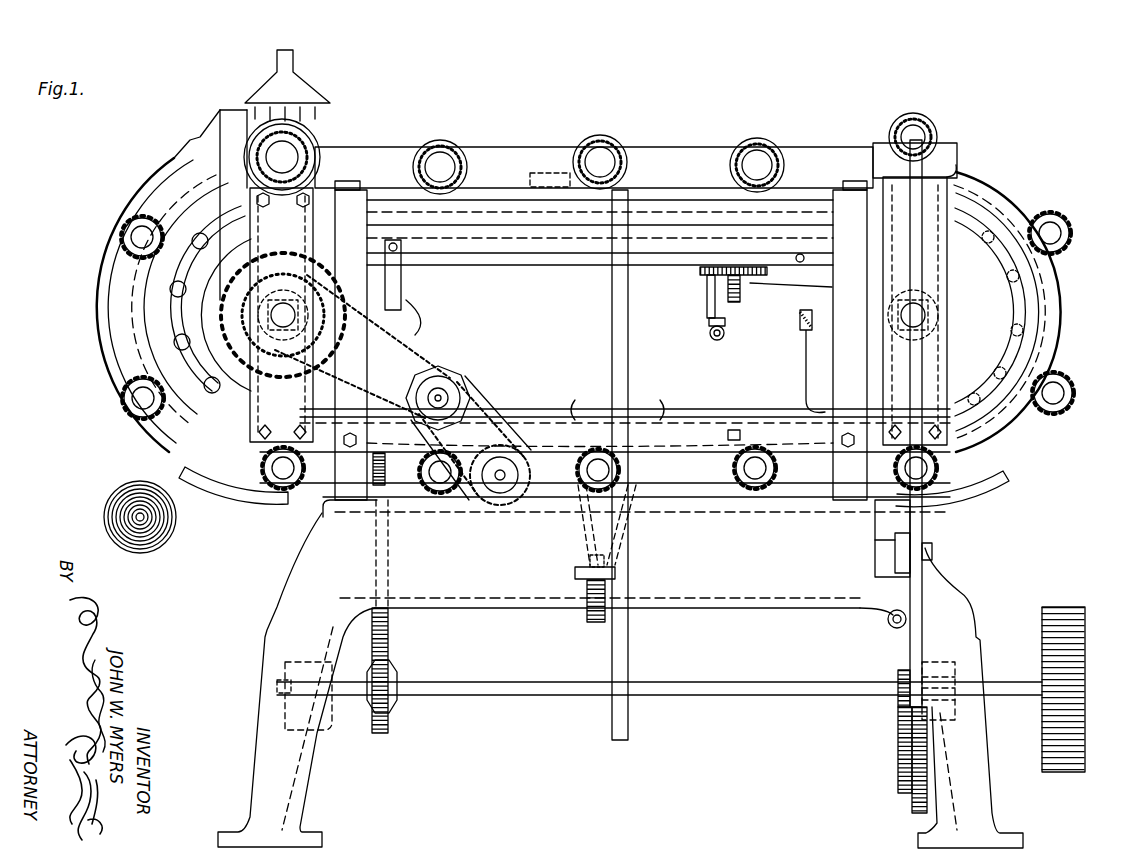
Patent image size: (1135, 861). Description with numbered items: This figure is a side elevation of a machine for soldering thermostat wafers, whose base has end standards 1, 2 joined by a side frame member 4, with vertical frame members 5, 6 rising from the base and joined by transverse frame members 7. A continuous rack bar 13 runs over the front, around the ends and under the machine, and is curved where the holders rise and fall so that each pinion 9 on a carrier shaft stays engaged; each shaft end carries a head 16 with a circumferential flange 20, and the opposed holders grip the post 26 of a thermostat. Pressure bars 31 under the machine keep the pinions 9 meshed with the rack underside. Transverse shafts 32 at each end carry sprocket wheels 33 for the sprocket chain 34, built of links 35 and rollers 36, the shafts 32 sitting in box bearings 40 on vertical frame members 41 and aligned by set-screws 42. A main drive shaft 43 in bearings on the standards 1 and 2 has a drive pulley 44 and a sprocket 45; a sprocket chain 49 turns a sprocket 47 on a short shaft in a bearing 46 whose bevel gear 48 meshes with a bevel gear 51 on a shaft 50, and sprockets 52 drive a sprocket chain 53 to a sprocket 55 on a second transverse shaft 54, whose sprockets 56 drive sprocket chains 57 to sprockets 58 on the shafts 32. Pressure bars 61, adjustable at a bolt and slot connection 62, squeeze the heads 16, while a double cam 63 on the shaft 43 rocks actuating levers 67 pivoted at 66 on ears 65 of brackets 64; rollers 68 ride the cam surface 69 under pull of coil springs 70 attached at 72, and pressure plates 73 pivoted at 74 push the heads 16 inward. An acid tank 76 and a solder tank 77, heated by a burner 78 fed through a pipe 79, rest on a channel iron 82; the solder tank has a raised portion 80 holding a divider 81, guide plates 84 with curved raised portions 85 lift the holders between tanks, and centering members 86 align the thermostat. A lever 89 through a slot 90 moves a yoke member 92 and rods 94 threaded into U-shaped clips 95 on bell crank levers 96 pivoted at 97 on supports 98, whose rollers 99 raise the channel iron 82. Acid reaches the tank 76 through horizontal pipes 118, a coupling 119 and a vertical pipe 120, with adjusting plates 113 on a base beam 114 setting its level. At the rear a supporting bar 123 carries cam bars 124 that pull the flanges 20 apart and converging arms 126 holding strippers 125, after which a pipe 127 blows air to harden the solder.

The end standard 1 is at (290, 600).
The end standard 2 is at (960, 600).
The side frame member 4 is at (634, 580).
The vertical frame member 5 is at (395, 265).
The vertical frame member 6 is at (745, 283).
The transverse frame member 7 is at (345, 517).
The pinion 9 is at (128, 217).
The rack bar 13 is at (150, 313).
The head 16 is at (140, 238).
The circumferential flange 20 is at (128, 225).
The post 26 is at (150, 520).
The pressure bar 31 is at (240, 505).
The shaft 32 is at (265, 330).
The sprocket wheel 33 is at (410, 300).
The sprocket chain 34 is at (245, 258).
The link 35 is at (165, 343).
The roller 36 is at (242, 317).
The box bearing 40 is at (258, 320).
The vertical frame member 41 is at (965, 273).
The set-screw 42 is at (245, 300).
The main drive shaft 43 is at (515, 695).
The drive pulley 44 is at (1060, 607).
The sprocket 45 is at (397, 670).
The bearing 46 is at (430, 495).
The sprocket 47 is at (372, 470).
The bevel gear 48 is at (480, 505).
The sprocket chain 49 is at (390, 625).
The shaft 50 is at (520, 500).
The bevel gear 51 is at (578, 470).
The sprocket 52 is at (503, 505).
The sprocket chain 53 is at (495, 400).
The second transverse shaft 54 is at (445, 390).
The sprocket 55 is at (485, 425).
The sprocket 56 is at (465, 395).
The sprocket chain 57 is at (320, 265).
The sprocket 58 is at (330, 335).
The pressure bar 61 is at (735, 165).
The bolt and slot connection 62 is at (345, 185).
The double cam 63 is at (900, 760).
The bracket 64 is at (905, 525).
The ear 65 is at (900, 568).
The pivot 66 is at (932, 548).
The actuating lever 67 is at (910, 240).
The roller 68 is at (903, 680).
The cam surface 69 is at (905, 795).
The coil spring 70 is at (888, 622).
The spring connection 72 is at (895, 630).
The pressure plate 73 is at (945, 150).
The pivot 74 is at (958, 168).
The acid tank 76 is at (660, 225).
The solder tank 77 is at (465, 210).
The burner 78 is at (485, 240).
The pipe 79 is at (615, 290).
The raised portion 80 is at (415, 207).
The divider 81 is at (440, 150).
The channel iron 82 is at (555, 268).
The guide plate 84 is at (665, 200).
The curved raised portion 85 is at (615, 165).
The centering member 86 is at (555, 175).
The lever 89 is at (596, 622).
The slot 90 is at (585, 585).
The yoke member 92 is at (590, 562).
The rod 94 is at (585, 500).
The U-shaped clip 95 is at (605, 408).
The bell crank lever 96 is at (410, 290).
The pivot 97 is at (735, 430).
The support 98 is at (740, 500).
The roller 99 is at (393, 243).
The adjusting plate 113 is at (710, 300).
The base beam 114 is at (738, 290).
The horizontal pipe 118 is at (722, 340).
The coupling 119 is at (724, 333).
The vertical pipe 120 is at (710, 330).
The supporting bar 123 is at (228, 150).
The cam bar 124 is at (197, 207).
The stripper 125 is at (163, 158).
The converging arm 126 is at (205, 125).
The pipe 127 is at (275, 102).